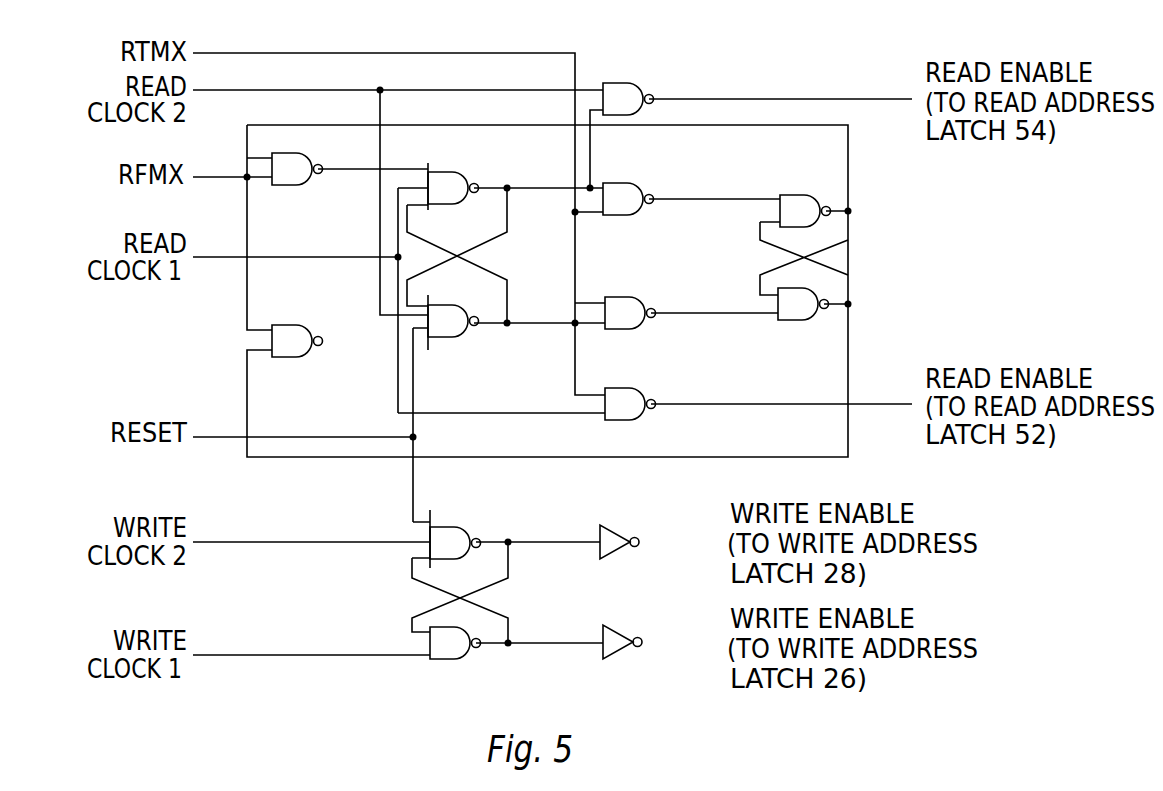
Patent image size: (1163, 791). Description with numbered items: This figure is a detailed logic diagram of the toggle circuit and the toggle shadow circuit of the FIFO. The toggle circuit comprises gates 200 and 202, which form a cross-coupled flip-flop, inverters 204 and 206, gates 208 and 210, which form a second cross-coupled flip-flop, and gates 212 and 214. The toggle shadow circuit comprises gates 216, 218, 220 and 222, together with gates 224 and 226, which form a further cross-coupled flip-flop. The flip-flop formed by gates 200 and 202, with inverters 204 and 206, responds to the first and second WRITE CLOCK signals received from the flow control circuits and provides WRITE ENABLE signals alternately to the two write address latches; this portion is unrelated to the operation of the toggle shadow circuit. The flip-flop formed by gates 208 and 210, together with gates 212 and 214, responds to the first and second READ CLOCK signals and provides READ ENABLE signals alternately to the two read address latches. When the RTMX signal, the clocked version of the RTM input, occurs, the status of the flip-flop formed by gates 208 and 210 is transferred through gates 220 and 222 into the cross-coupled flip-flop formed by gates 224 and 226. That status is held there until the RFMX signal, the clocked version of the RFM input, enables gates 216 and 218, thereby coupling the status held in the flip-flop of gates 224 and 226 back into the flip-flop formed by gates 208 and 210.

The gate 200 is at (459, 660).
The gate 202 is at (456, 528).
The inverter 204 is at (626, 628).
The inverter 206 is at (621, 527).
The gate 208 is at (458, 342).
The gate 210 is at (458, 178).
The gate 212 is at (641, 390).
The gate 214 is at (621, 83).
The gate 216 is at (306, 325).
The gate 218 is at (292, 185).
The gate 220 is at (626, 300).
The gate 222 is at (627, 189).
The gate 224 is at (800, 322).
The gate 226 is at (813, 170).